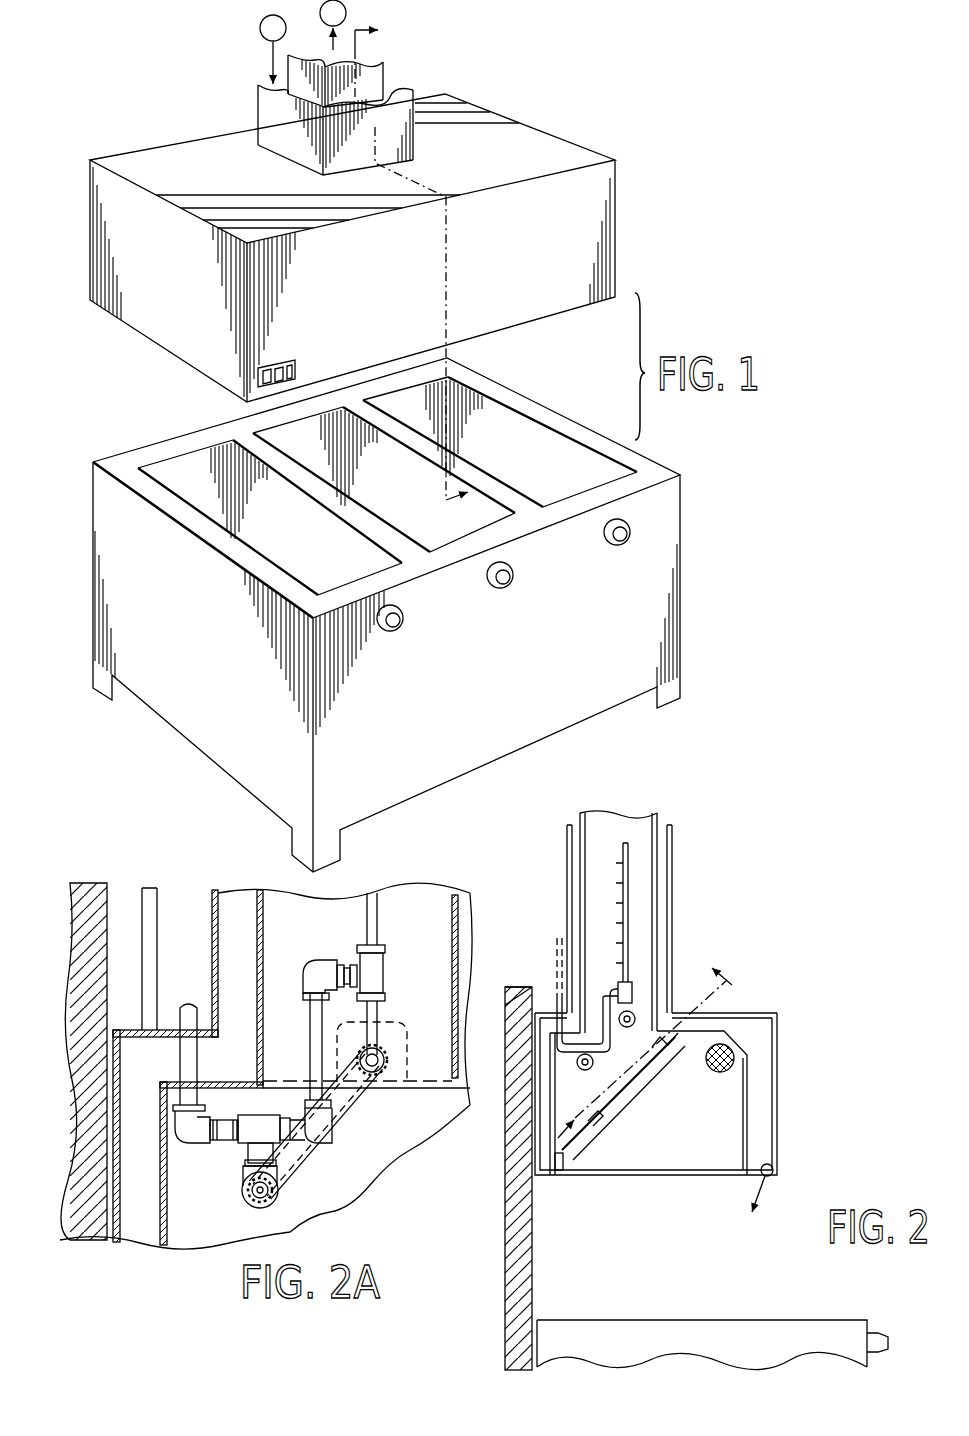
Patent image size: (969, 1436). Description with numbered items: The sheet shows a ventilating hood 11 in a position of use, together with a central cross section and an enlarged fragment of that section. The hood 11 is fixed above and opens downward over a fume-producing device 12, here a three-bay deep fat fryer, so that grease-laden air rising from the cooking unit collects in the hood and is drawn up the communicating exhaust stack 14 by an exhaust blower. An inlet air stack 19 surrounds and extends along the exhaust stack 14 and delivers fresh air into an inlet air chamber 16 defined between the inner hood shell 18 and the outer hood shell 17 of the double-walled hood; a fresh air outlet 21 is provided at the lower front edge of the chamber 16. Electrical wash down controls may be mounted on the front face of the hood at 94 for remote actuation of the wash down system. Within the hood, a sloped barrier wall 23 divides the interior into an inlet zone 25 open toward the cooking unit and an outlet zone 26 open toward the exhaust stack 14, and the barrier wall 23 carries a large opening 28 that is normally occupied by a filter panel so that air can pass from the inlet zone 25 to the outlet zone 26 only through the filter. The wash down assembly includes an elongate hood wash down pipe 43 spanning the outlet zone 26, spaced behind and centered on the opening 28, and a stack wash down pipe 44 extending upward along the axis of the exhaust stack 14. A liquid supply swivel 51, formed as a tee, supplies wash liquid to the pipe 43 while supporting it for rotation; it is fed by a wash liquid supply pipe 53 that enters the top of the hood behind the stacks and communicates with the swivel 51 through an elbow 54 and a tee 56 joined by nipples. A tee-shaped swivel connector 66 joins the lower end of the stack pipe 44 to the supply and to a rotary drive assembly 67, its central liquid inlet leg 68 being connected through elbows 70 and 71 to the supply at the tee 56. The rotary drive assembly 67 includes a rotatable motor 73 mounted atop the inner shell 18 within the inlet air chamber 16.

In FIG. 1, the ventilating hood 11 is at (620, 197).
In FIG. 2, the ventilating hood 11 is at (782, 1020).
In FIG. 1, the fume-producing device 12 is at (690, 497).
In FIG. 2, the fume-producing device 12 is at (842, 1310).
In FIG. 1, the exhaust stack 14 is at (365, 75).
In FIG. 2A, the exhaust stack 14 is at (240, 890).
In FIG. 2, the exhaust stack 14 is at (657, 845).
In FIG. 1, the inlet air stack 19 is at (400, 105).
In FIG. 2A, the inlet air stack 19 is at (212, 900).
In FIG. 2, the inlet air stack 19 is at (672, 880).
In FIG. 1, the electrical wash down controls 94 is at (283, 364).
In FIG. 2A, the stack wash down pipe 44 is at (372, 915).
In FIG. 2A, the swivel connector 66 is at (378, 955).
In FIG. 2A, the rotary drive assembly 67 is at (395, 1010).
In FIG. 2A, the central liquid inlet leg 68 is at (348, 965).
In FIG. 2A, the elbow 70 is at (318, 966).
In FIG. 2A, the elbow 71 is at (322, 1130).
In FIG. 2A, the rotatable motor 73 is at (400, 1020).
In FIG. 2A, the wash liquid supply pipe 53 is at (185, 1010).
In FIG. 2A, the elbow 54 is at (170, 1103).
In FIG. 2A, the tee 56 is at (250, 1150).
In FIG. 2A, the liquid supply swivel 51 is at (242, 1188).
In FIG. 2A, the hood wash down pipe 43 is at (245, 1194).
In FIG. 2A, the outlet zone 26 is at (240, 1218).
In FIG. 2, the outlet zone 26 is at (575, 1118).
In FIG. 2, the inlet air chamber 16 is at (765, 1072).
In FIG. 2, the outer hood shell 17 is at (778, 1112).
In FIG. 2, the inner hood shell 18 is at (750, 1135).
In FIG. 2, the fresh air outlet 21 is at (772, 1178).
In FIG. 2, the barrier wall 23 is at (577, 1145).
In FIG. 2, the inlet zone 25 is at (698, 1140).
In FIG. 2, the opening 28 is at (598, 1113).